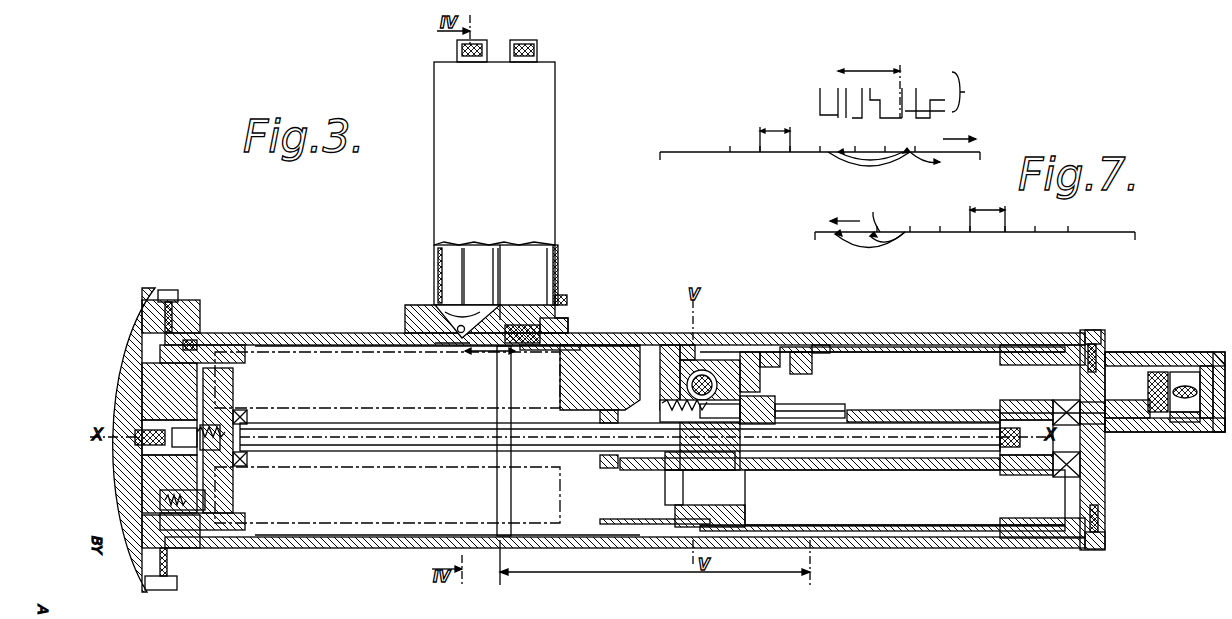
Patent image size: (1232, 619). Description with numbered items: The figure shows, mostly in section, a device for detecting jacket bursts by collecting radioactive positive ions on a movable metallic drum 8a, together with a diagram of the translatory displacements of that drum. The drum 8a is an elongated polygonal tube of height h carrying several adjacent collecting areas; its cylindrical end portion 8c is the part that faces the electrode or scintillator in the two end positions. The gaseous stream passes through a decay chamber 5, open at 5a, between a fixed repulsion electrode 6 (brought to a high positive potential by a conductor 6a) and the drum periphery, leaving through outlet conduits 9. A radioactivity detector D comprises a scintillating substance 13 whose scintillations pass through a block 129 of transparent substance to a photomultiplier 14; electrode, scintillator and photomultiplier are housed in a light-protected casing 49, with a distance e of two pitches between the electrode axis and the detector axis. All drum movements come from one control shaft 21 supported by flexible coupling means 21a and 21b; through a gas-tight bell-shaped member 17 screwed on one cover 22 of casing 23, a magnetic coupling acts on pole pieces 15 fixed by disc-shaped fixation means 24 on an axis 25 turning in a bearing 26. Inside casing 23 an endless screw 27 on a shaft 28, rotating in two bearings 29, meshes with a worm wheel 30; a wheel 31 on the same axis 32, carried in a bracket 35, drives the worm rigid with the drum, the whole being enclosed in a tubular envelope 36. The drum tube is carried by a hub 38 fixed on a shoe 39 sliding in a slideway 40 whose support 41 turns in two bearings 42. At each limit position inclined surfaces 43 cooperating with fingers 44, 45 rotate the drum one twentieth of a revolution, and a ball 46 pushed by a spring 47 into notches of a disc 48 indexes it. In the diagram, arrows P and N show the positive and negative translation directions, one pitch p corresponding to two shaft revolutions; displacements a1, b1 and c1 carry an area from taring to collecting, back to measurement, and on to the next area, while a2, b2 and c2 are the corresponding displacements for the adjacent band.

In FIG. 3, the decay chamber 5 is at (420, 330).
In FIG. 3, the opening of decay chamber 5a is at (458, 340).
In FIG. 3, the repulsion electrode 6 is at (458, 322).
In FIG. 7, the repulsion electrode 6 is at (832, 110).
In FIG. 3, the conductor 6a is at (473, 276).
In FIG. 3, the drum 8a is at (565, 345).
In FIG. 7, the drum 8a is at (775, 154).
In FIG. 3, the cylindrical portion of drum 8c is at (522, 535).
In FIG. 3, the outlet conduit 9 is at (430, 303).
In FIG. 3, the scintillating substance 13 is at (530, 340).
In FIG. 7, the scintillating substance 13 is at (927, 111).
In FIG. 3, the photomultiplier 14 is at (518, 265).
In FIG. 7, the photomultiplier 14 is at (920, 92).
In FIG. 3, the block of transparent substance 129 is at (524, 322).
In FIG. 3, the casing 49 is at (443, 82).
In FIG. 3, the radioactivity detector D is at (557, 280).
In FIG. 7, the radioactivity detector D is at (966, 92).
In FIG. 3, the distance between electrode axis and detector axis e is at (490, 357).
In FIG. 7, the distance between electrode axis and detector axis e is at (869, 85).
In FIG. 3, the height of drum h is at (655, 568).
In FIG. 7, the pitch p is at (882, 173).
In FIG. 7, the positive direction arrow P is at (959, 130).
In FIG. 7, the negative direction arrow N is at (845, 212).
In FIG. 7, the displacement a1 is at (870, 157).
In FIG. 7, the displacement b1 is at (869, 166).
In FIG. 7, the displacement c1 is at (925, 166).
In FIG. 7, the displacement a2 is at (887, 248).
In FIG. 7, the displacement b2 is at (870, 248).
In FIG. 7, the displacement c2 is at (873, 216).
In FIG. 3, the pole pieces 15 is at (1168, 412).
In FIG. 3, the gas tight bell-shaped member 17 is at (1222, 425).
In FIG. 3, the control shaft 21 is at (823, 405).
In FIG. 3, the flexible coupling means 21a is at (1125, 375).
In FIG. 3, the flexible coupling means 21b is at (759, 401).
In FIG. 3, the cover 22 is at (128, 352).
In FIG. 3, the casing 23 is at (1030, 342).
In FIG. 3, the disc-shaped fixation means 24 is at (1188, 385).
In FIG. 3, the axis 25 is at (1192, 420).
In FIG. 3, the bearing 26 is at (1160, 372).
In FIG. 3, the endless screw 27 is at (724, 422).
In FIG. 3, the shaft 28 is at (770, 350).
In FIG. 3, the bearings 29 is at (670, 348).
In FIG. 3, the worm wheel 30 is at (745, 348).
In FIG. 3, the wheel 31 is at (720, 348).
In FIG. 3, the axis 32 is at (690, 345).
In FIG. 3, the bracket 35 is at (694, 440).
In FIG. 3, the tubular envelope 36 is at (905, 520).
In FIG. 3, the hub 38 is at (620, 378).
In FIG. 3, the shoe 39 is at (603, 415).
In FIG. 3, the slideway 40 is at (572, 440).
In FIG. 3, the support 41 is at (1040, 472).
In FIG. 3, the bearings 42 is at (240, 408).
In FIG. 3, the inclined surfaces 43 is at (830, 348).
In FIG. 3, the finger 44 is at (805, 348).
In FIG. 3, the finger 45 is at (195, 345).
In FIG. 3, the ball 46 is at (222, 496).
In FIG. 3, the spring 47 is at (200, 530).
In FIG. 3, the disc 48 is at (250, 458).